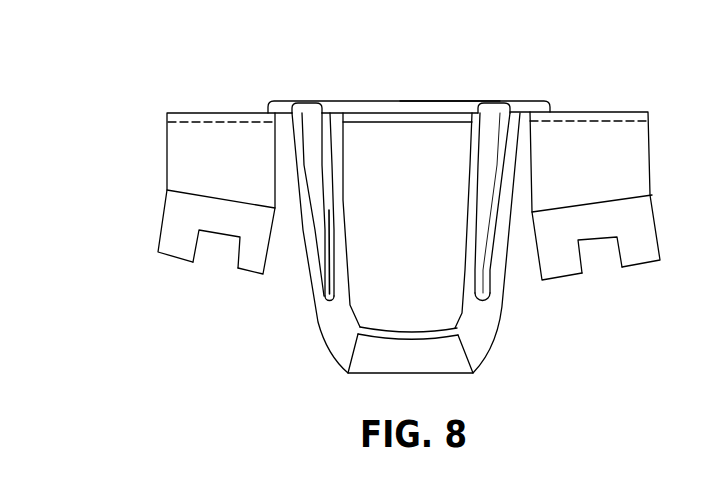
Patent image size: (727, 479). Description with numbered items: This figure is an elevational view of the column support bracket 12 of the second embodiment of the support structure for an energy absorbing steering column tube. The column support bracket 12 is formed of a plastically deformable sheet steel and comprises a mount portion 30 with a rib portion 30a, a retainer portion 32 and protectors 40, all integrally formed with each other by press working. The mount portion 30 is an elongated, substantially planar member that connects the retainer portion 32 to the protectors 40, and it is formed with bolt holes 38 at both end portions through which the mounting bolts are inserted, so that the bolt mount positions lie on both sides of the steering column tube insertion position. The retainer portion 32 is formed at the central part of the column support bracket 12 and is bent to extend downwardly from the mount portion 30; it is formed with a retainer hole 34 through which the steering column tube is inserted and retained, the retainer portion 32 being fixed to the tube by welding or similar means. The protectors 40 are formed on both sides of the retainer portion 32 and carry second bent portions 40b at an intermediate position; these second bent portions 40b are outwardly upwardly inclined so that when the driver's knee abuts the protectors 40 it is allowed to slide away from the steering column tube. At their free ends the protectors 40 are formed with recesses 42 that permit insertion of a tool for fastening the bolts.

The column support bracket 12 is at (500, 86).
The mount portion 30 is at (405, 113).
The rib portion 30a is at (448, 101).
The retainer portion 32 is at (327, 295).
The retainer hole 34 is at (465, 268).
The bolt holes 38 is at (231, 113).
The protectors 40 is at (175, 155).
The second bent portions 40b is at (183, 194).
The recesses 42 is at (237, 252).